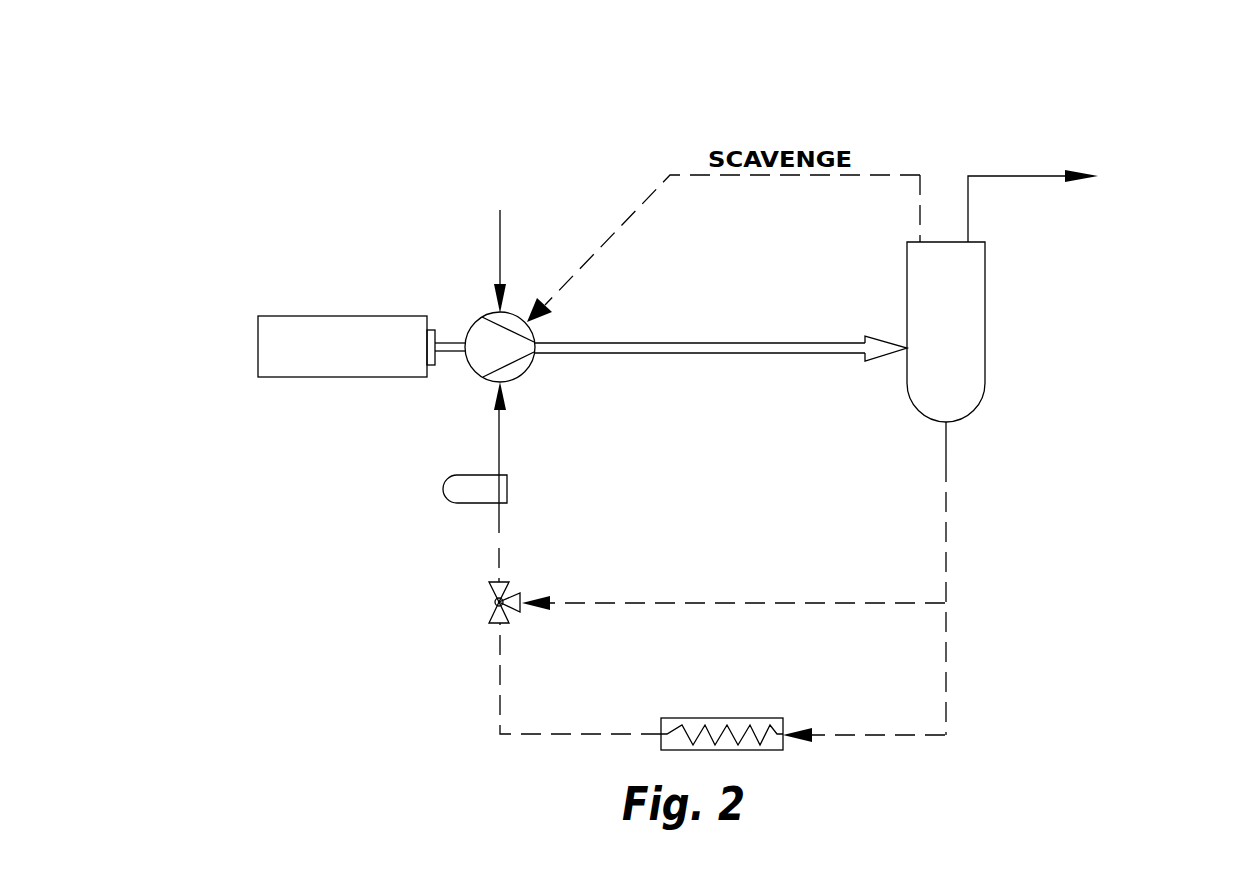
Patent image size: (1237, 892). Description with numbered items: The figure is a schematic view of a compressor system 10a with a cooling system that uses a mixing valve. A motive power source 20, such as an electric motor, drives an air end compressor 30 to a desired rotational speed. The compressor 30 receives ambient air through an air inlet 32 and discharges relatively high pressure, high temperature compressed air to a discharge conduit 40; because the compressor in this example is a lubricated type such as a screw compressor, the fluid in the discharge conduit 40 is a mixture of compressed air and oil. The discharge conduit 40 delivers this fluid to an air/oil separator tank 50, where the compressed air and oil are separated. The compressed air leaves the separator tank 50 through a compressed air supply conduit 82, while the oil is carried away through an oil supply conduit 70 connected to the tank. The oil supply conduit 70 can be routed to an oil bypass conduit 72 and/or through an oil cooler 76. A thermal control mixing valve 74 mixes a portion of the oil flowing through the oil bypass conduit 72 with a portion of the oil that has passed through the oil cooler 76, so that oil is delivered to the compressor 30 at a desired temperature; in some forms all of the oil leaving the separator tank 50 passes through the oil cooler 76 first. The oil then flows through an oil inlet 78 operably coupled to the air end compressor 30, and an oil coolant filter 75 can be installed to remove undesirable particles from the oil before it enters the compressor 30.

The compressor system 10a is at (907, 90).
The motive power source 20 is at (347, 316).
The air end compressor 30 is at (533, 332).
The air inlet 32 is at (500, 232).
The discharge conduit 40 is at (700, 340).
The air/oil separator tank 50 is at (907, 258).
The oil supply conduit 70 is at (946, 450).
The oil bypass conduit 72 is at (708, 603).
The thermal control mixing valve 74 is at (512, 588).
The oil coolant filter 75 is at (443, 492).
The oil cooler 76 is at (783, 718).
The oil inlet 78 is at (499, 442).
The compressed air supply conduit 82 is at (988, 176).